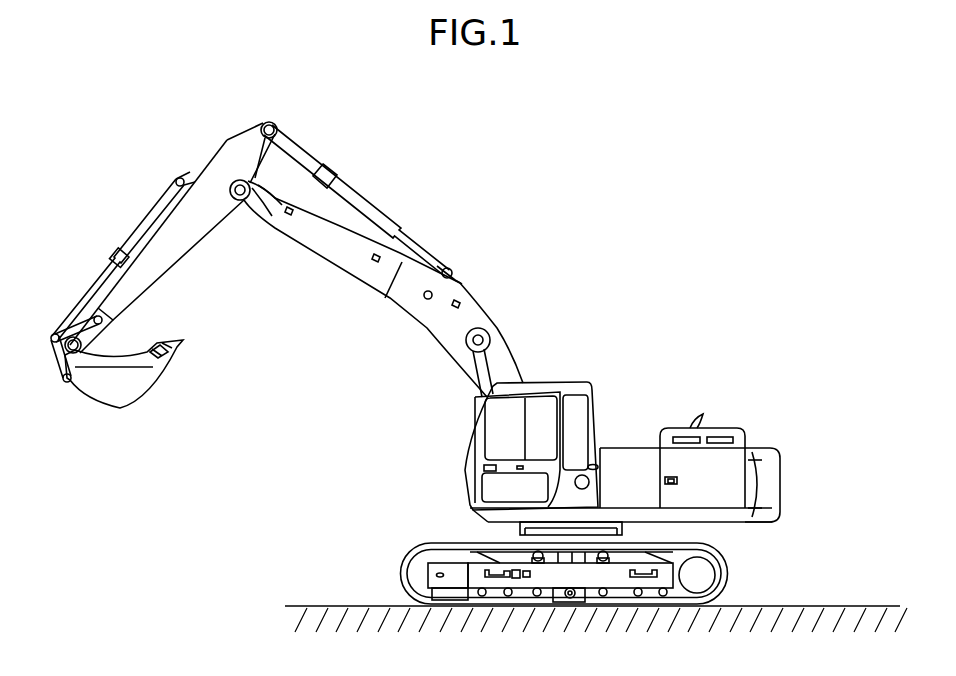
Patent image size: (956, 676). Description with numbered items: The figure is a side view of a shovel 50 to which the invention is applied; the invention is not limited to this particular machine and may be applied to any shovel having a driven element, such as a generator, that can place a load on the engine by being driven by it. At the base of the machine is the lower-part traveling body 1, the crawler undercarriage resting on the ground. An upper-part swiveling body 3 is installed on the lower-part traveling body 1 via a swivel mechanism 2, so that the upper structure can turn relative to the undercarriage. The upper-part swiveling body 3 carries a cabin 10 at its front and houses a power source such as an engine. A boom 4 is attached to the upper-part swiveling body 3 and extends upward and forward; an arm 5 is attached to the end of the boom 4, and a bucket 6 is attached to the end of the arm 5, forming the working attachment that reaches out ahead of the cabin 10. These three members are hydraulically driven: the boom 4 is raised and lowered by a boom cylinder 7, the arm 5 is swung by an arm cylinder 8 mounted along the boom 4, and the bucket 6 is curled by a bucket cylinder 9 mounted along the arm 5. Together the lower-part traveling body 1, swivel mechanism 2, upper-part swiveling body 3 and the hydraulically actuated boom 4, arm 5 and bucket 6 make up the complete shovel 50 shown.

The lower-part traveling body 1 is at (418, 582).
The swivel mechanism 2 is at (640, 532).
The upper-part swiveling body 3 is at (632, 447).
The boom 4 is at (410, 308).
The arm 5 is at (190, 243).
The bucket 6 is at (117, 413).
The boom cylinder 7 is at (483, 375).
The arm cylinder 8 is at (400, 232).
The bucket cylinder 9 is at (140, 232).
The cabin 10 is at (583, 383).
The shovel 50 is at (818, 246).